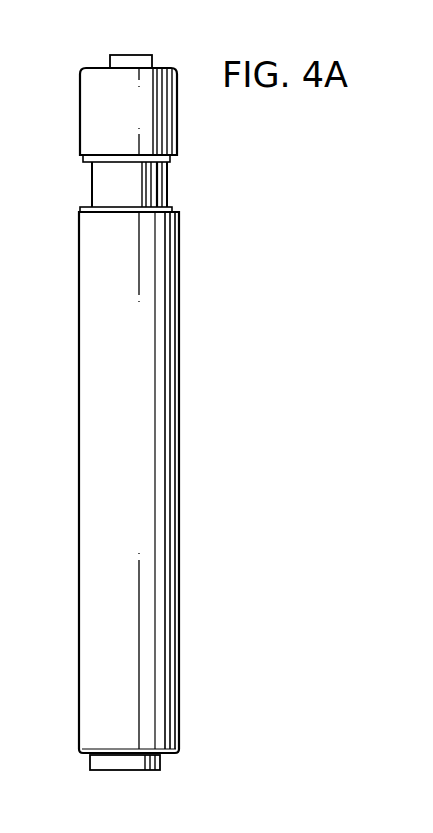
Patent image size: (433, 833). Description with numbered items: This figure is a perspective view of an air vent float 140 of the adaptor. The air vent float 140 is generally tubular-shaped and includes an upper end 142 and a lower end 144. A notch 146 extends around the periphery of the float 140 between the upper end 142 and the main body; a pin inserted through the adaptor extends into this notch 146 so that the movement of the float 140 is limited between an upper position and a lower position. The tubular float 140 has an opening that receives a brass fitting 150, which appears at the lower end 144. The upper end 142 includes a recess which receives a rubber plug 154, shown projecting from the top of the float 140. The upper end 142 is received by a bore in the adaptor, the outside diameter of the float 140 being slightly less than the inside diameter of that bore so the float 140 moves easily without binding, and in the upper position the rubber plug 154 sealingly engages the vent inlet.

The air vent float 140 is at (197, 304).
The upper end 142 is at (80, 118).
The lower end 144 is at (179, 637).
The notch 146 is at (168, 180).
The brass fitting 150 is at (127, 767).
The rubber plug 154 is at (132, 60).